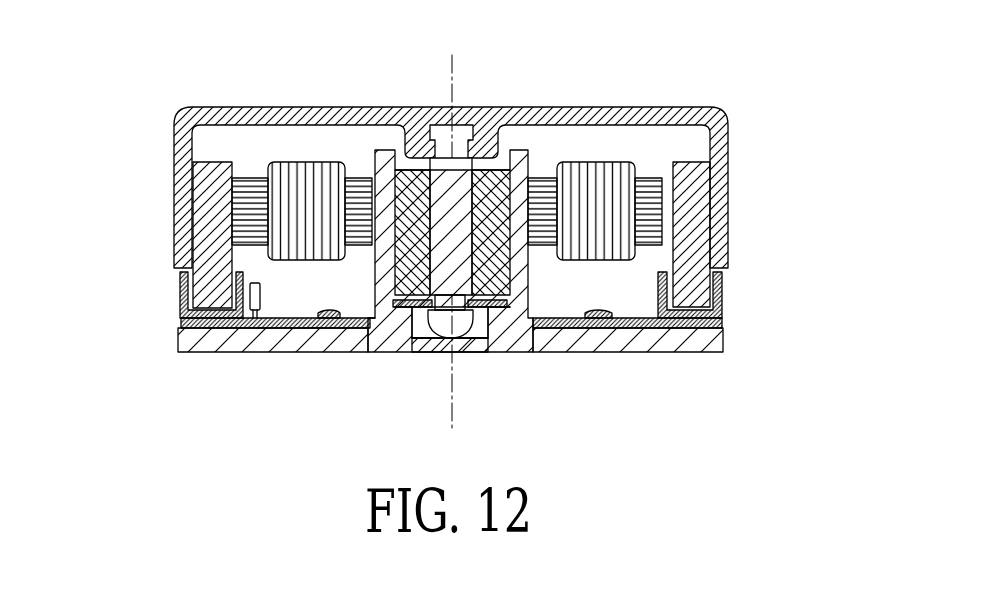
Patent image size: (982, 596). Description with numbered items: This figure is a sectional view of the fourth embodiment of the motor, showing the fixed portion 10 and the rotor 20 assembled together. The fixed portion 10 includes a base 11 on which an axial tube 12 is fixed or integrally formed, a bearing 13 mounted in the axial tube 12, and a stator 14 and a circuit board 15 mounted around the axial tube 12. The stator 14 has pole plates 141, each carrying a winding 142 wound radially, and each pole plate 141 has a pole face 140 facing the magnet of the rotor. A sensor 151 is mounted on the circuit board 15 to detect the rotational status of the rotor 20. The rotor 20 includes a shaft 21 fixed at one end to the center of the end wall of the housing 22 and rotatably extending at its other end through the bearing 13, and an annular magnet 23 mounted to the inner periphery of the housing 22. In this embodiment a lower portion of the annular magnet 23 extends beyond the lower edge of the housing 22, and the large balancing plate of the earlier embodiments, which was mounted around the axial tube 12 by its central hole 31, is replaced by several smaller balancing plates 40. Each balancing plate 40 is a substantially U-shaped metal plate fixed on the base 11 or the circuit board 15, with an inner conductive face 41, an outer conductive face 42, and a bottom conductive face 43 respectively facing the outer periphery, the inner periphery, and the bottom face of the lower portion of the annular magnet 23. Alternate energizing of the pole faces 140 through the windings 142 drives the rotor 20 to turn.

The fixed portion 10 is at (496, 292).
The base 11 is at (585, 347).
The axial tube 12 is at (525, 270).
The bearing 13 is at (508, 290).
The stator 14 is at (496, 262).
The pole face 140 is at (240, 182).
The pole plate 141 is at (777, 421).
The winding 142 is at (622, 253).
The circuit board 15 is at (612, 320).
The rotor 20 is at (401, 169).
The shaft 21 is at (460, 165).
The housing 22 is at (187, 143).
The annular magnet 23 is at (213, 195).
The central hole 31 is at (368, 320).
The balancing plate 40 is at (380, 359).
The inner conductive face 41 is at (253, 323).
The outer conductive face 42 is at (182, 292).
The bottom conductive face 43 is at (193, 353).
The sensor 151 is at (263, 295).